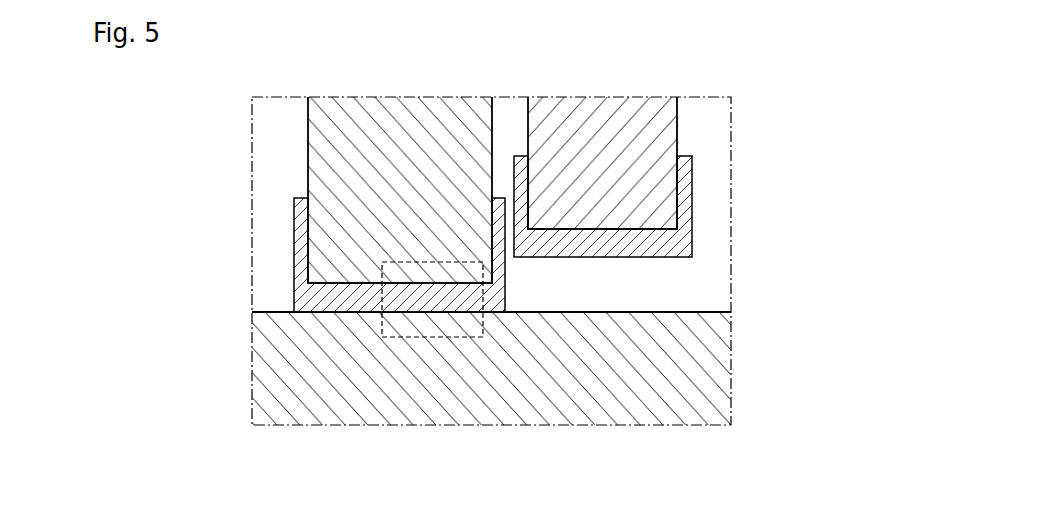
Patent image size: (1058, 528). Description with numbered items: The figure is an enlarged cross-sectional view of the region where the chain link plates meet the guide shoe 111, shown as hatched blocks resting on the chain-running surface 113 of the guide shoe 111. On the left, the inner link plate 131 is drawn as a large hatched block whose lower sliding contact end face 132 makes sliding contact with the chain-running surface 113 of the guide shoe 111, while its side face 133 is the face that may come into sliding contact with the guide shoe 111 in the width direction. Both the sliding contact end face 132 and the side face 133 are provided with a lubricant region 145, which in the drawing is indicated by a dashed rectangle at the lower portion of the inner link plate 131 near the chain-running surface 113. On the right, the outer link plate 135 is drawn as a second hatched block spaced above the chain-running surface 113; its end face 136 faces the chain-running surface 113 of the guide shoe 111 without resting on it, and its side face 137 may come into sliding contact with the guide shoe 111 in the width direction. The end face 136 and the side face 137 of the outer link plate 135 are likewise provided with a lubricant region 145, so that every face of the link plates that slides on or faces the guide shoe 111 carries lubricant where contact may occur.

The guide shoe 111 is at (710, 367).
The chain-running surface 113 is at (560, 312).
The inner link plate 131 is at (385, 118).
The sliding contact end face 132 is at (362, 285).
The side face 133 is at (294, 249).
The outer link plate 135 is at (609, 108).
The end face 136 is at (635, 230).
The side face 137 is at (693, 179).
The lubricant region 145 is at (294, 300).